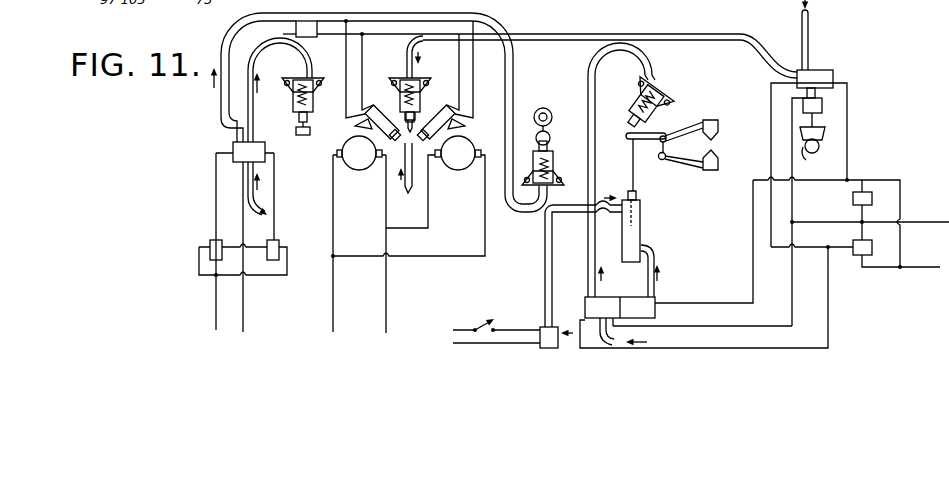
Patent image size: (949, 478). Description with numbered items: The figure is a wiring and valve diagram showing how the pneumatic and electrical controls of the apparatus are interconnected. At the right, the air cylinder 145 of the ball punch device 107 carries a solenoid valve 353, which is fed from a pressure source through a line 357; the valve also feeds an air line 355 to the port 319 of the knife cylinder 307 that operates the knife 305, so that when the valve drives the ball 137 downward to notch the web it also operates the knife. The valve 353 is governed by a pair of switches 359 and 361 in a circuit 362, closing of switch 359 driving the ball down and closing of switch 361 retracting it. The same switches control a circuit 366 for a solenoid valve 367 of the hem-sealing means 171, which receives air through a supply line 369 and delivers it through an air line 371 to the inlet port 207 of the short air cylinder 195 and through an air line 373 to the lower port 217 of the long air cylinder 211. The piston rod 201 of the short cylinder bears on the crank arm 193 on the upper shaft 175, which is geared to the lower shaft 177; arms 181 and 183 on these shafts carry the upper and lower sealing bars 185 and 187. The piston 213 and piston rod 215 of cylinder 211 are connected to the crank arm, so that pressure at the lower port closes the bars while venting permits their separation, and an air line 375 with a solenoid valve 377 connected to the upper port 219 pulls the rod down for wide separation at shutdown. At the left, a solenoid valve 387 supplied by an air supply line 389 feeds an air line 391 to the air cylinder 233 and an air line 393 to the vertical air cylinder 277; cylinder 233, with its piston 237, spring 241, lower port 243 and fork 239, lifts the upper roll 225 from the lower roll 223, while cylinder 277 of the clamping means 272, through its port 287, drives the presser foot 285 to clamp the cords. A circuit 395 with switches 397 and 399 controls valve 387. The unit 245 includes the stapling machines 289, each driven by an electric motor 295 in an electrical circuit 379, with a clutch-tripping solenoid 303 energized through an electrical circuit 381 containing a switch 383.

The ball punch device 107 is at (818, 150).
The ball 137 is at (808, 154).
The air cylinder 145 is at (823, 104).
The hem-sealing means 171 is at (708, 114).
The upper shaft 175 is at (646, 134).
The lower shaft 177 is at (686, 155).
The arms 181 is at (684, 126).
The arms 183 is at (698, 181).
The upper sealing bar 185 is at (718, 128).
The lower sealing bar 187 is at (724, 159).
The crank arm 193 is at (645, 152).
The short air cylinder 195 is at (674, 97).
The piston rod 201 is at (641, 111).
The inlet port 207 is at (663, 84).
The air cylinder 211 is at (637, 235).
The piston 213 is at (637, 222).
The piston rod 215 is at (634, 172).
The lower port 217 is at (644, 250).
The upper port 219 is at (622, 216).
The lower roll 223 is at (550, 137).
The upper roll 225 is at (543, 107).
The air cylinder 233 is at (552, 165).
The piston 237 is at (559, 191).
The fork 239 is at (552, 115).
The spring 241 is at (536, 160).
The lower port 243 is at (522, 191).
The unit 245 is at (399, 178).
The clamping means 272 is at (307, 76).
The vertical air cylinder 277 is at (312, 97).
The presser foot 285 is at (305, 135).
The port 287 is at (296, 85).
The stapling machines 289 is at (378, 105).
The electric motor 295 is at (355, 170).
The solenoid 303 is at (355, 125).
The knife 305 is at (376, 153).
The air cylinder 307 is at (414, 86).
The port 319 is at (405, 77).
The solenoid valve 353 is at (829, 72).
The air line 355 is at (405, 52).
The line 357 is at (809, 24).
The switch 359 is at (853, 199).
The switch 361 is at (858, 256).
The circuit 362 is at (854, 148).
The circuit 366 is at (716, 300).
The solenoid valve 367 is at (656, 308).
The air supply line 369 is at (598, 326).
The air line 371 is at (648, 55).
The air line 373 is at (648, 286).
The air line 375 is at (545, 262).
The solenoid valve 377 is at (545, 328).
The electrical circuit 379 is at (428, 260).
The electrical circuit 381 is at (400, 20).
The switch 383 is at (305, 21).
The solenoid valve 387 is at (240, 148).
The air supply line 389 is at (262, 204).
The air line 391 is at (218, 107).
The air line 393 is at (252, 100).
The circuit 395 is at (212, 206).
The switch 397 is at (209, 248).
The switch 399 is at (279, 247).